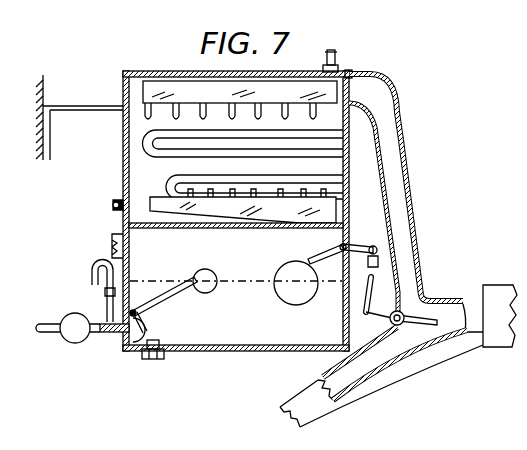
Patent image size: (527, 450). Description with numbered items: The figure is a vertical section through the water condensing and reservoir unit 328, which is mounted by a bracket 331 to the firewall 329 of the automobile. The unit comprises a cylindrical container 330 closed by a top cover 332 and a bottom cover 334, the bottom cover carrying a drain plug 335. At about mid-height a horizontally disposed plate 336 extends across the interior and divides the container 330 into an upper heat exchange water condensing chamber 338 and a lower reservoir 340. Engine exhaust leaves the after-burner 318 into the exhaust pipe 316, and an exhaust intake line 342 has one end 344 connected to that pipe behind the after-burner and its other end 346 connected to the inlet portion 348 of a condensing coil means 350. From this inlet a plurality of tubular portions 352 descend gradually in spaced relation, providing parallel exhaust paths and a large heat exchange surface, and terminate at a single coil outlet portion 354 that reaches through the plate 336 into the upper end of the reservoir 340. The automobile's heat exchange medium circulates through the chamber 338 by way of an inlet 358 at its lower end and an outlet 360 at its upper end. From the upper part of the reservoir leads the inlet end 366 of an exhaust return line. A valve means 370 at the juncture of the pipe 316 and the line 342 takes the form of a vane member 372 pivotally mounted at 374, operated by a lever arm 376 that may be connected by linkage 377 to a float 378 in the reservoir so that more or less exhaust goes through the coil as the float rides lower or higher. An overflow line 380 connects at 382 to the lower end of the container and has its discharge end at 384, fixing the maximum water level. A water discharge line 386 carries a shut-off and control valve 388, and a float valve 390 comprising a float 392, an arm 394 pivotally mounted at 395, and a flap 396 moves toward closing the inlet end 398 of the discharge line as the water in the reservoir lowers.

The exhaust pipe 316 is at (398, 357).
The after-burner 318 is at (494, 290).
The water condensing and reservoir unit 328 is at (299, 68).
The firewall 329 is at (45, 91).
The cylindrical container 330 is at (348, 165).
The bracket 331 is at (83, 108).
The top cover 332 is at (158, 72).
The bottom cover 334 is at (281, 351).
The drain plug 335 is at (153, 362).
The horizontally disposed plate 336 is at (193, 228).
The heat exchange water condensing chamber 338 is at (156, 177).
The reservoir 340 is at (262, 332).
The exhaust intake line 342 is at (411, 203).
The inlet end of exhaust intake line 344 is at (426, 299).
The outlet end of exhaust intake line 346 is at (353, 77).
The coil inlet portion 348 is at (336, 72).
The condensing coil means 350 is at (147, 160).
The tubular portions 352 is at (333, 118).
The coil outlet portion 354 is at (316, 212).
The inlet 358 is at (120, 211).
The outlet 360 is at (332, 50).
The inlet end of exhaust return line 366 is at (111, 254).
The valve means 370 is at (406, 273).
The vane member 372 is at (432, 339).
The pivot 374 is at (406, 336).
The lever arm 376 is at (371, 323).
The linkage 377 is at (339, 292).
The float 378 is at (281, 281).
The overflow line 380 is at (113, 273).
The overflow line connection 382 is at (118, 343).
The overflow discharge end 384 is at (97, 281).
The water discharge line 386 is at (105, 322).
The shut-off and control valve 388 is at (59, 319).
The float valve 390 is at (191, 304).
The float 392 is at (204, 270).
The arm 394 is at (173, 298).
The pivot 395 is at (135, 311).
The flap 396 is at (167, 348).
The inlet end of water discharge line 398 is at (136, 343).